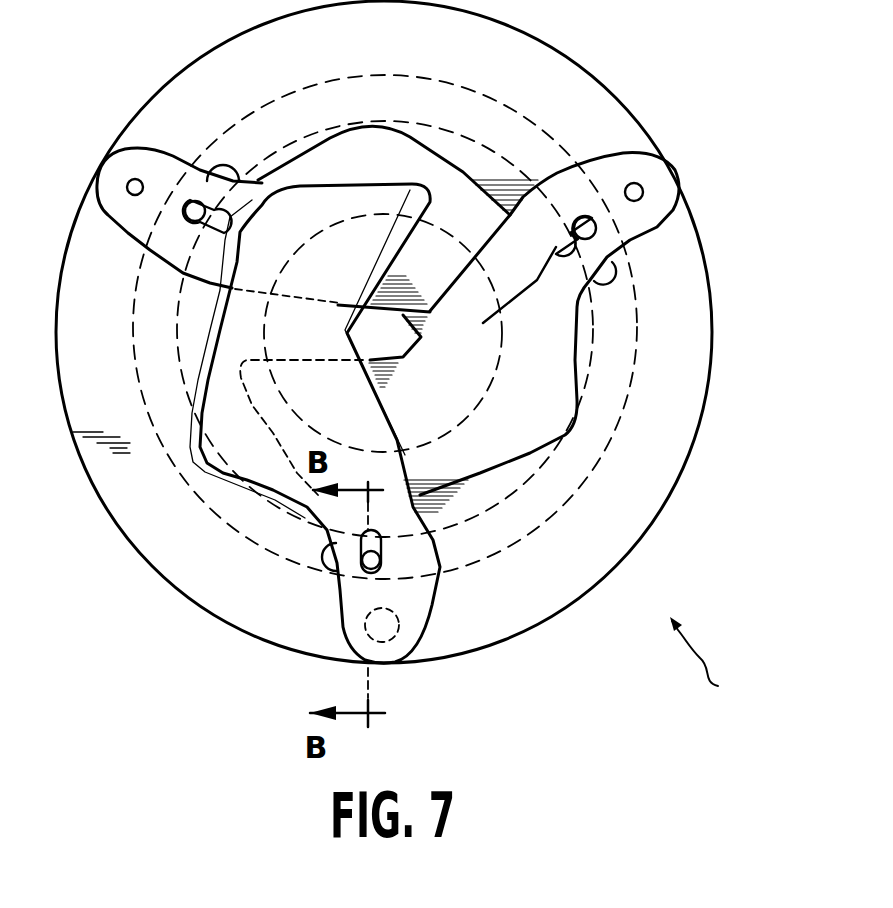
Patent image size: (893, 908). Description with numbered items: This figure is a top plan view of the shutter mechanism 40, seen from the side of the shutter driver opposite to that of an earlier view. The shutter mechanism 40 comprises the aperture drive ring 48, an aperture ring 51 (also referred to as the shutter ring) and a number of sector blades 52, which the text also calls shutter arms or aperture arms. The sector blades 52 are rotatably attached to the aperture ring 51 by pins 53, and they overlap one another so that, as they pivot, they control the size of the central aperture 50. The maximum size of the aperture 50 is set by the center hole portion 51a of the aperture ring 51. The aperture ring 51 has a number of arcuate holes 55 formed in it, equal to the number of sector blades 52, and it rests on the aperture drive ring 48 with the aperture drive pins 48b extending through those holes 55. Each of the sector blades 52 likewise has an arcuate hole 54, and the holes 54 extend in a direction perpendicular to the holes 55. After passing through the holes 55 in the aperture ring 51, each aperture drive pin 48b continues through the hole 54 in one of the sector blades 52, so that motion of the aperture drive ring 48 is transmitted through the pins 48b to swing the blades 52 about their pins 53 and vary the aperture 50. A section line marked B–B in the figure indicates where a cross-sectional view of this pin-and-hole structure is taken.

The shutter mechanism 40 is at (713, 664).
The aperture drive ring 48 is at (548, 505).
The aperture drive pins 48b is at (192, 220).
The aperture 50 is at (370, 360).
The aperture ring 51 is at (703, 343).
The center hole portion 51a is at (593, 452).
The sector blades 52 is at (137, 163).
The pins 53 is at (128, 183).
The arcuate holes 54 is at (253, 175).
The arcuate holes 55 is at (186, 224).